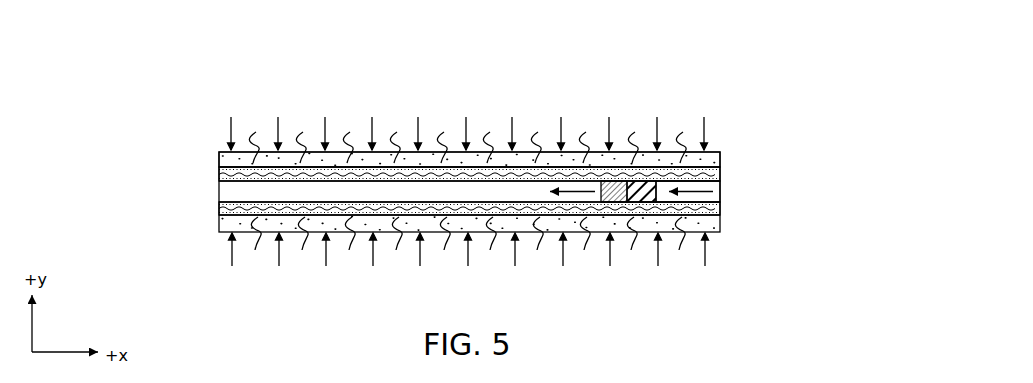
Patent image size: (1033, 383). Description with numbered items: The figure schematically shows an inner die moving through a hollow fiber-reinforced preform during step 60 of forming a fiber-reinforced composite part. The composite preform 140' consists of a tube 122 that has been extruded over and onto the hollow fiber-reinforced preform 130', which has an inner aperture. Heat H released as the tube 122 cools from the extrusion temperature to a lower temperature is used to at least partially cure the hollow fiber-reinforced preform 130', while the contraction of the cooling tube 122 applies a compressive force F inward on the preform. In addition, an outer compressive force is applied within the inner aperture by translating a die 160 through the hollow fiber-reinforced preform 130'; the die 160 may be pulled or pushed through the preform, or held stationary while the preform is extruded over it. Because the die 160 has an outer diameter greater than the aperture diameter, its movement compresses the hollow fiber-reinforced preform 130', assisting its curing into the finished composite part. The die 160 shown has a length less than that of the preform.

The step 60 is at (661, 79).
The tube 122 is at (724, 160).
The hollow fiber-reinforced preform 130' is at (417, 205).
The composite preform 140' is at (437, 169).
The die 160 is at (650, 201).
The force F is at (230, 134).
The heat H is at (251, 141).